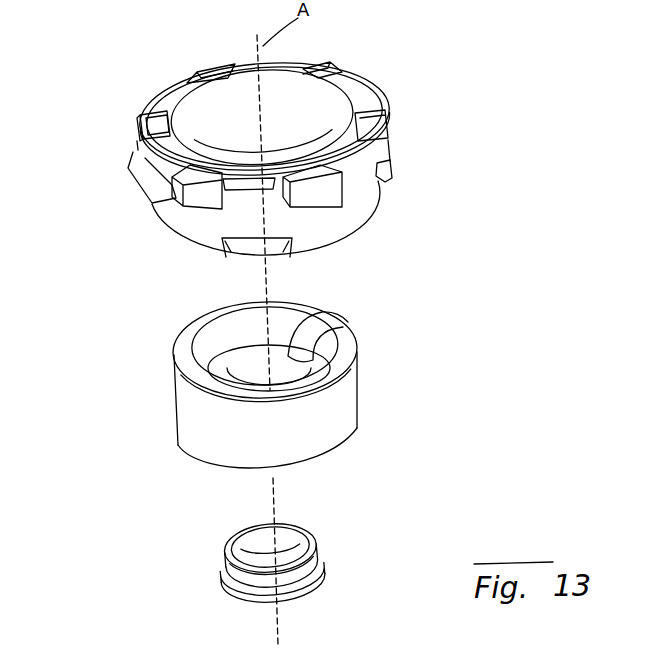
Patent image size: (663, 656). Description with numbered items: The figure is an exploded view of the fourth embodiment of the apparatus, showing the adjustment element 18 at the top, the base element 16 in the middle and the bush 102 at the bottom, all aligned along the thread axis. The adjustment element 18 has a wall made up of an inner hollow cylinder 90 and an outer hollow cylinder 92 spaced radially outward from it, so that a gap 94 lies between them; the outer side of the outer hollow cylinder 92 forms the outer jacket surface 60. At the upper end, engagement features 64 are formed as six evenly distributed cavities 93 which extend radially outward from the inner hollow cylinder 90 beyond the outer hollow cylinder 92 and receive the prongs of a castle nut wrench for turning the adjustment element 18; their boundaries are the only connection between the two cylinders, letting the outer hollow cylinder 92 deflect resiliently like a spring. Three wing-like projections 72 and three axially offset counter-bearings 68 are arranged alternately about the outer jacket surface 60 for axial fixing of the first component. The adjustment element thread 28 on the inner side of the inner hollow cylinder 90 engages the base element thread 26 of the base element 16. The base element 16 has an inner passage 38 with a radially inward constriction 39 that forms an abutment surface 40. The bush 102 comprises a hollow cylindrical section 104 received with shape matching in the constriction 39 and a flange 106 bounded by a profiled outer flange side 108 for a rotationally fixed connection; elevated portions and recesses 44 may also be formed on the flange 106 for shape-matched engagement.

The adjustment element 18 is at (279, 145).
The adjustment element thread 28 is at (323, 103).
The outer hollow cylinder 92 is at (163, 117).
The gap 94 is at (171, 112).
The inner hollow cylinder 90 is at (185, 100).
The cavity 93 is at (387, 122).
The engagement feature 64 is at (392, 124).
The wing-like projection 72 is at (385, 173).
The outer jacket surface 60 is at (178, 215).
The counter-bearing 68 is at (276, 238).
The base element 16 is at (259, 377).
The passage 38 is at (205, 348).
The constriction 39 is at (294, 358).
The abutment surface 40 is at (317, 352).
The base element thread 26 is at (200, 417).
The bush 102 is at (277, 579).
The hollow cylindrical section 104 is at (318, 548).
The elevated portions and recesses 44 is at (223, 577).
The flange 106 is at (322, 568).
The outer flange side 108 is at (257, 594).